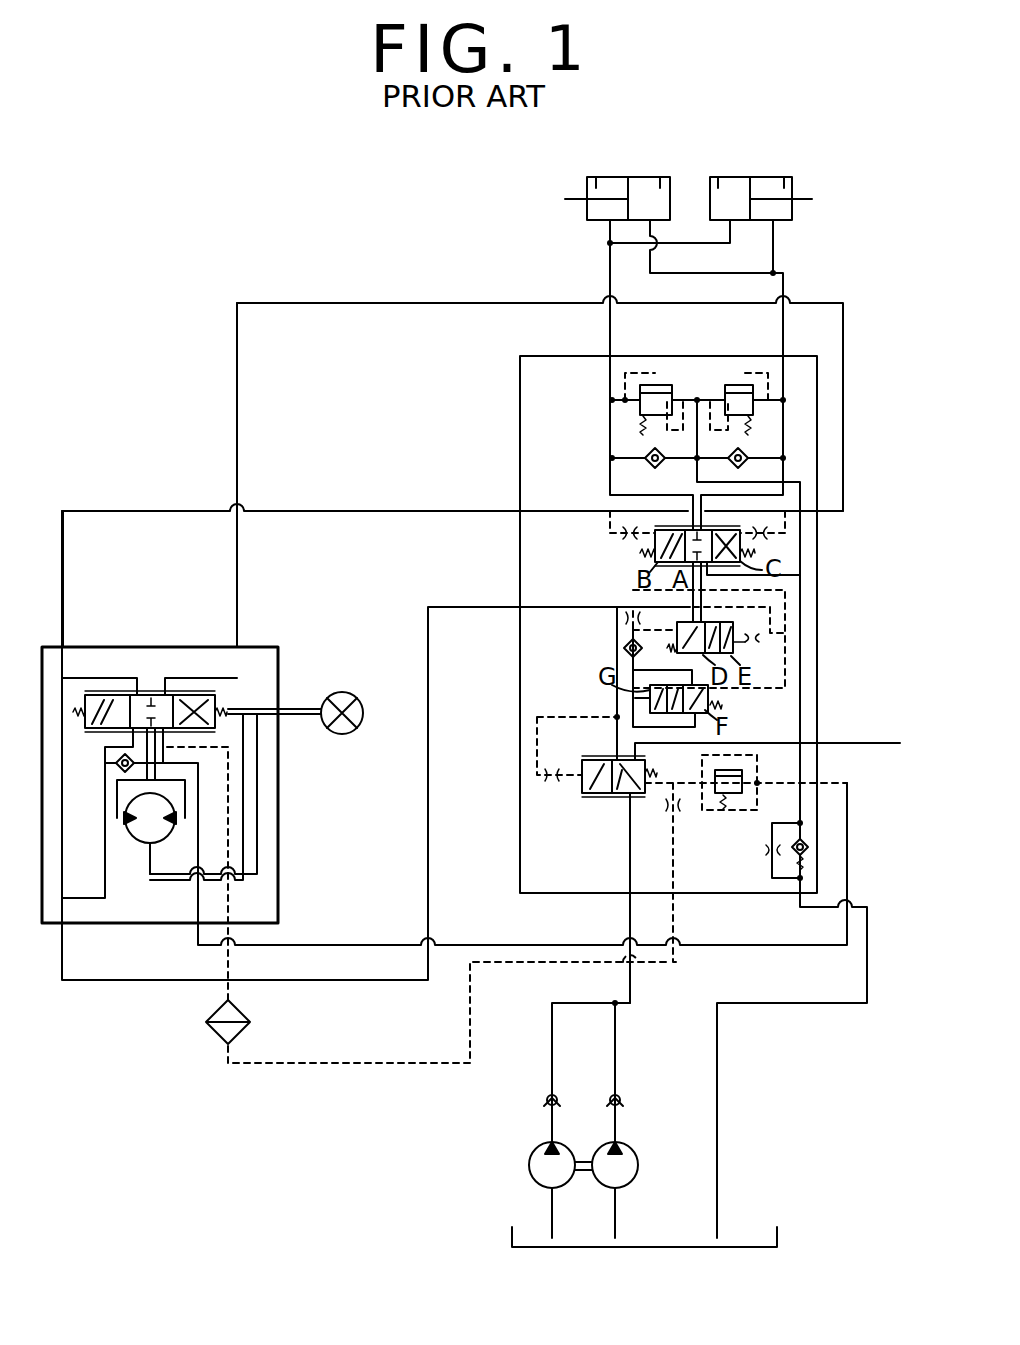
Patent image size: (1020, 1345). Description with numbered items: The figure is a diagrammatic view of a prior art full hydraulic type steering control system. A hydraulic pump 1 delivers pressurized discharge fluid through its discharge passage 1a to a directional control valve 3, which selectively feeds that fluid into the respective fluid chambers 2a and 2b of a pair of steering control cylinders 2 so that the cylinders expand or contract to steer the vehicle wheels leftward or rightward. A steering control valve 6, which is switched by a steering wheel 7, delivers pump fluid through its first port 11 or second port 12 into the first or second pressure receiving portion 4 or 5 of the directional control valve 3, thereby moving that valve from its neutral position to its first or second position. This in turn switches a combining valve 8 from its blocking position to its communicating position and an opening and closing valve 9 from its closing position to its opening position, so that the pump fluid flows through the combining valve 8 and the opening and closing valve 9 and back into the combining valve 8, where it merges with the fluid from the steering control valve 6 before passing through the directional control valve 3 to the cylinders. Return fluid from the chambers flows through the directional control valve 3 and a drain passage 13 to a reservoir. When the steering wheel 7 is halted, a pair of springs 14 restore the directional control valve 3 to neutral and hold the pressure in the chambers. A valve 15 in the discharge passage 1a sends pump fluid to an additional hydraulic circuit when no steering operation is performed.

The hydraulic pump 1 is at (600, 1146).
The discharge passage 1a is at (632, 992).
The steering control cylinders 2 is at (593, 222).
The fluid chamber 2a is at (592, 178).
The fluid chamber 2b is at (657, 178).
The directional control valve 3 is at (636, 559).
The first pressure receiving portion 4 is at (650, 535).
The second pressure receiving portion 5 is at (745, 533).
The steering control valve 6 is at (281, 674).
The steering wheel 7 is at (352, 695).
The combining valve 8 is at (735, 645).
The opening and closing valve 9 is at (650, 708).
The first port 11 is at (63, 647).
The second port 12 is at (237, 647).
The drain passage 13 is at (817, 658).
The springs 14 is at (645, 553).
The valve 15 is at (582, 765).